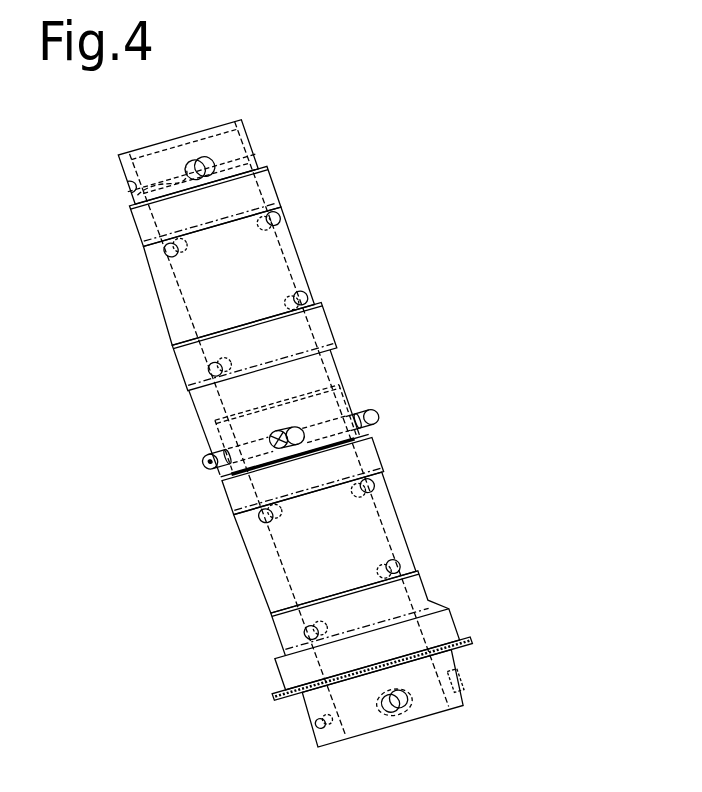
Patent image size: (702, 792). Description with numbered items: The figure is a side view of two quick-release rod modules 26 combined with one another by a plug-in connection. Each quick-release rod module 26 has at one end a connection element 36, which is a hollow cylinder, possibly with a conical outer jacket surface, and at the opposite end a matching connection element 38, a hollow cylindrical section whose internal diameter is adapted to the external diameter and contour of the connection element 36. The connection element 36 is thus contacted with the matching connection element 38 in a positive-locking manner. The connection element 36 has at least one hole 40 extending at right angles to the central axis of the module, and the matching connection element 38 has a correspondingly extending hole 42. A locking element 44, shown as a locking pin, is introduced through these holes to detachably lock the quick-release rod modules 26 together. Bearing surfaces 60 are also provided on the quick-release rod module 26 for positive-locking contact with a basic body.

The quick-release rod module 26 is at (250, 267).
The connection element 36 is at (266, 166).
The matching connection element 38 is at (354, 387).
The hole 40 is at (236, 157).
The hole 42 is at (323, 443).
The locking element 44 is at (245, 436).
The bearing surface 60 is at (432, 632).